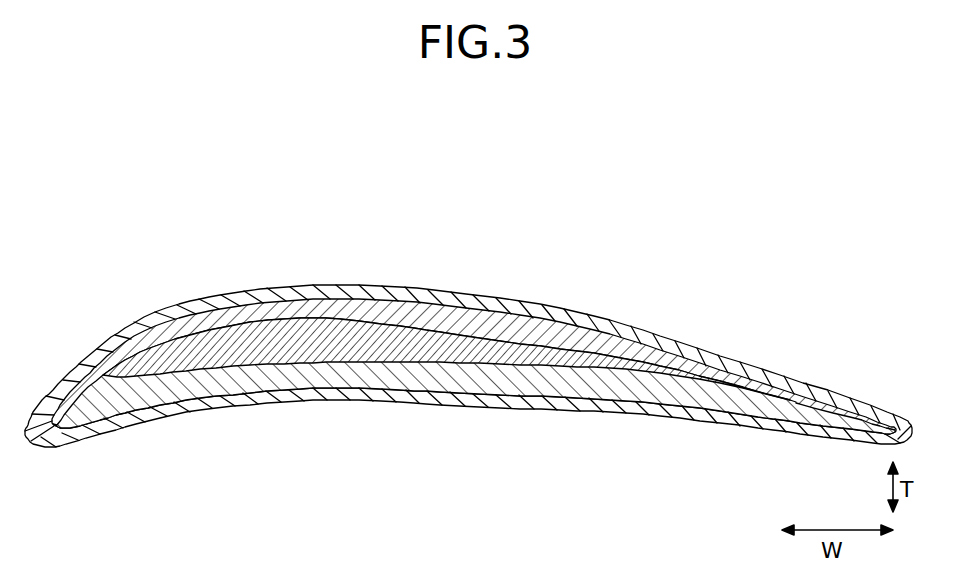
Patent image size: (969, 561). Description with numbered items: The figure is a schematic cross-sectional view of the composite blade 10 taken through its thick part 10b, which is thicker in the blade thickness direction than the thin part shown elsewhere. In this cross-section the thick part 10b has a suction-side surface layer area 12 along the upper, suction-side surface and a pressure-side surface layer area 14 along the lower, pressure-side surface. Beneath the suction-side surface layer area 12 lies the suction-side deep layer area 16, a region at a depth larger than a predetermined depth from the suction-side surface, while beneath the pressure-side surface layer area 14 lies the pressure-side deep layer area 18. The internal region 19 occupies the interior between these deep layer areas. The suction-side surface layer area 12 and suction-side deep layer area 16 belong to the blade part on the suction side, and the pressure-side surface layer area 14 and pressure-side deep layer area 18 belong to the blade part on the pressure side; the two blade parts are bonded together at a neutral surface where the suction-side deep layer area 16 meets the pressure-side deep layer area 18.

The composite blade 10 is at (468, 346).
The thick part 10b is at (468, 346).
The suction-side surface layer area 12 is at (293, 290).
The pressure-side surface layer area 14 is at (303, 398).
The suction-side deep layer area 16 is at (407, 309).
The pressure-side deep layer area 18 is at (415, 385).
The internal region 19 is at (357, 340).